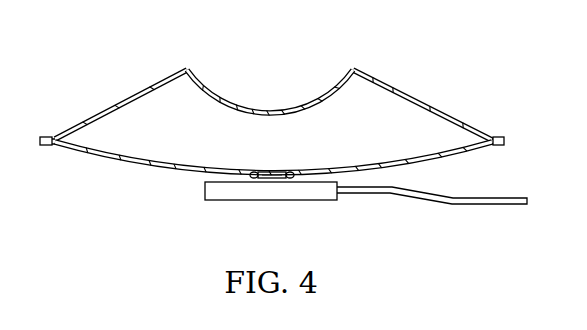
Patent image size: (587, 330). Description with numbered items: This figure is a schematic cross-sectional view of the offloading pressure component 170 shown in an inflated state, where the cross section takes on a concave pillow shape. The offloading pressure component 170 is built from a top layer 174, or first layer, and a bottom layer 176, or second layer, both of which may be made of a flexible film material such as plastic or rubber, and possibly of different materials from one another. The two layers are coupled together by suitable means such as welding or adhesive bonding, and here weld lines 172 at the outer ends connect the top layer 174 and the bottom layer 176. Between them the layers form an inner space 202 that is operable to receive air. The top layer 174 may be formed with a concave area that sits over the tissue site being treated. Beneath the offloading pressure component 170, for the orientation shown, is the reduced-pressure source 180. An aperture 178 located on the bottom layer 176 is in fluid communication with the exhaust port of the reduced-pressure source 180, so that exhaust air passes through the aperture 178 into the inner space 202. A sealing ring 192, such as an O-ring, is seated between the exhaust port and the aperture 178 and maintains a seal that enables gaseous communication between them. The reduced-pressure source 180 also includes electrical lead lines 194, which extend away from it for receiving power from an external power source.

The offloading pressure component 170 is at (130, 97).
The weld lines 172 is at (56, 139).
The top layer 174 is at (190, 71).
The bottom layer 176 is at (129, 161).
The aperture 178 is at (265, 170).
The reduced-pressure source 180 is at (270, 202).
The sealing ring 192 is at (301, 173).
The electrical lead lines 194 is at (477, 206).
The inner space 202 is at (372, 149).